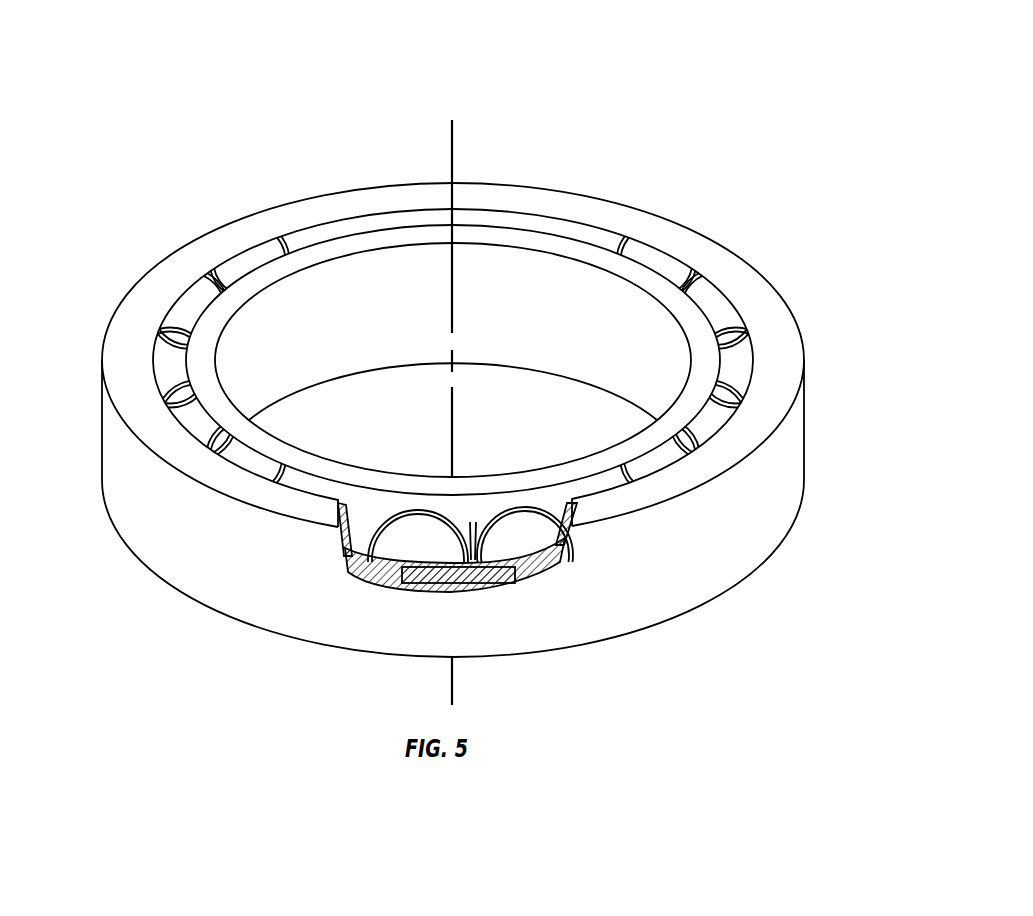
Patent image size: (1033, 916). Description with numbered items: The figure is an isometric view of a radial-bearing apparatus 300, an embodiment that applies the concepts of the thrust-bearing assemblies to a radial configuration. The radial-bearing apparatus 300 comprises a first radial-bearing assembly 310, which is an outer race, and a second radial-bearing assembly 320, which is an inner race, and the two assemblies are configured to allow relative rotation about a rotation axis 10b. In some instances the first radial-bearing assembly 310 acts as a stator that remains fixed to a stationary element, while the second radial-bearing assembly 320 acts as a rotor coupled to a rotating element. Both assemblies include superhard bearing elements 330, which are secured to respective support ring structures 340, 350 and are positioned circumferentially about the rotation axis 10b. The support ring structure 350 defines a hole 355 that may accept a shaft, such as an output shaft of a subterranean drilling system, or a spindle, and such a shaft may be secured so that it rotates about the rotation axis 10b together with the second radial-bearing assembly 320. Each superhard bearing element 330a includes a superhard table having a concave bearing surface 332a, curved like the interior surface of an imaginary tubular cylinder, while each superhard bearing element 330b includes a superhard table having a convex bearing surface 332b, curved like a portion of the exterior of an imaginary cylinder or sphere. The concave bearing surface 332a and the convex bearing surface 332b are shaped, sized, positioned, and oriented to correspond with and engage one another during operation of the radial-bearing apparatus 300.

The radial-bearing apparatus 300 is at (624, 78).
The rotation axis 10b is at (453, 147).
The first radial-bearing assembly 310 is at (722, 260).
The second radial-bearing assembly 320 is at (600, 250).
The superhard bearing elements 330 is at (489, 630).
The superhard bearing element 330a is at (490, 594).
The superhard bearing element 330b is at (483, 553).
The concave bearing surface 332a is at (467, 566).
The convex bearing surface 332b is at (420, 540).
The support ring structure 340 is at (768, 494).
The support ring structure 350 is at (598, 361).
The hole 355 is at (398, 388).